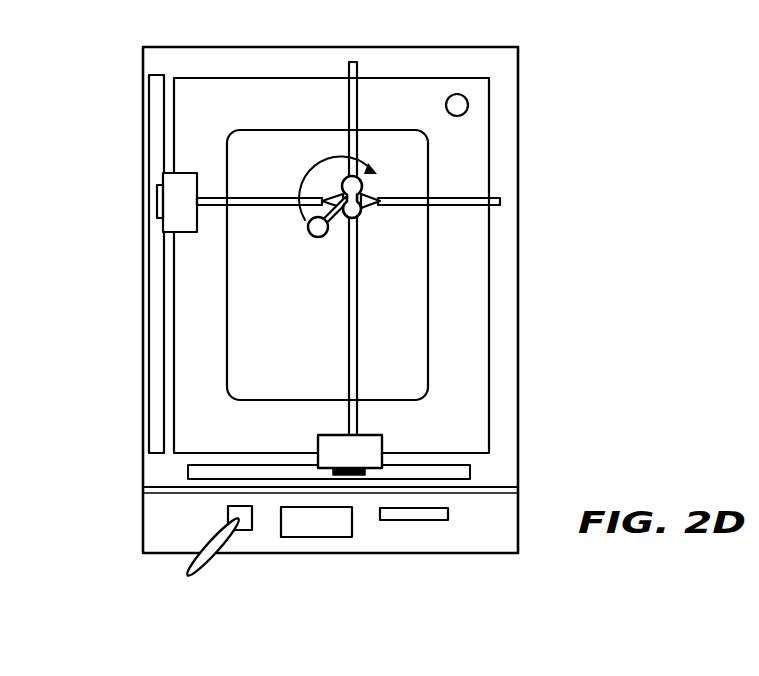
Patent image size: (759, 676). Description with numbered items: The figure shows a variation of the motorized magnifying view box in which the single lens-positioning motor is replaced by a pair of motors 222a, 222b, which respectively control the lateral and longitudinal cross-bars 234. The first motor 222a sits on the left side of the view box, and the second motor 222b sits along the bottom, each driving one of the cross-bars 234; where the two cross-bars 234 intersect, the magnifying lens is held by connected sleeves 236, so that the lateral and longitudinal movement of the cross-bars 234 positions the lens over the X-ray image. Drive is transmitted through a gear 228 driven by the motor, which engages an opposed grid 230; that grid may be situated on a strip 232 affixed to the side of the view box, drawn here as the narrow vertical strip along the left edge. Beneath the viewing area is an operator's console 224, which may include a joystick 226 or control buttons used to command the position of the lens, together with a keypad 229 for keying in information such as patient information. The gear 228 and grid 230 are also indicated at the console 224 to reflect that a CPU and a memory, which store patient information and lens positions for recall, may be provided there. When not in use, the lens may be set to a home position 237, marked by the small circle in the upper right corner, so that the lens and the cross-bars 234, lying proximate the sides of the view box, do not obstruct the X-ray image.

The motor 222a is at (180, 213).
The motor 222b is at (380, 447).
The operator's console 224 is at (267, 543).
The joystick 226 is at (183, 572).
The gear 228 is at (160, 203).
The keypad 229 is at (398, 515).
The opposed grid 230 is at (482, 518).
The strip 232 is at (155, 120).
The cross-bars 234 is at (283, 197).
The connected sleeves 236 is at (365, 213).
The home position 237 is at (468, 107).